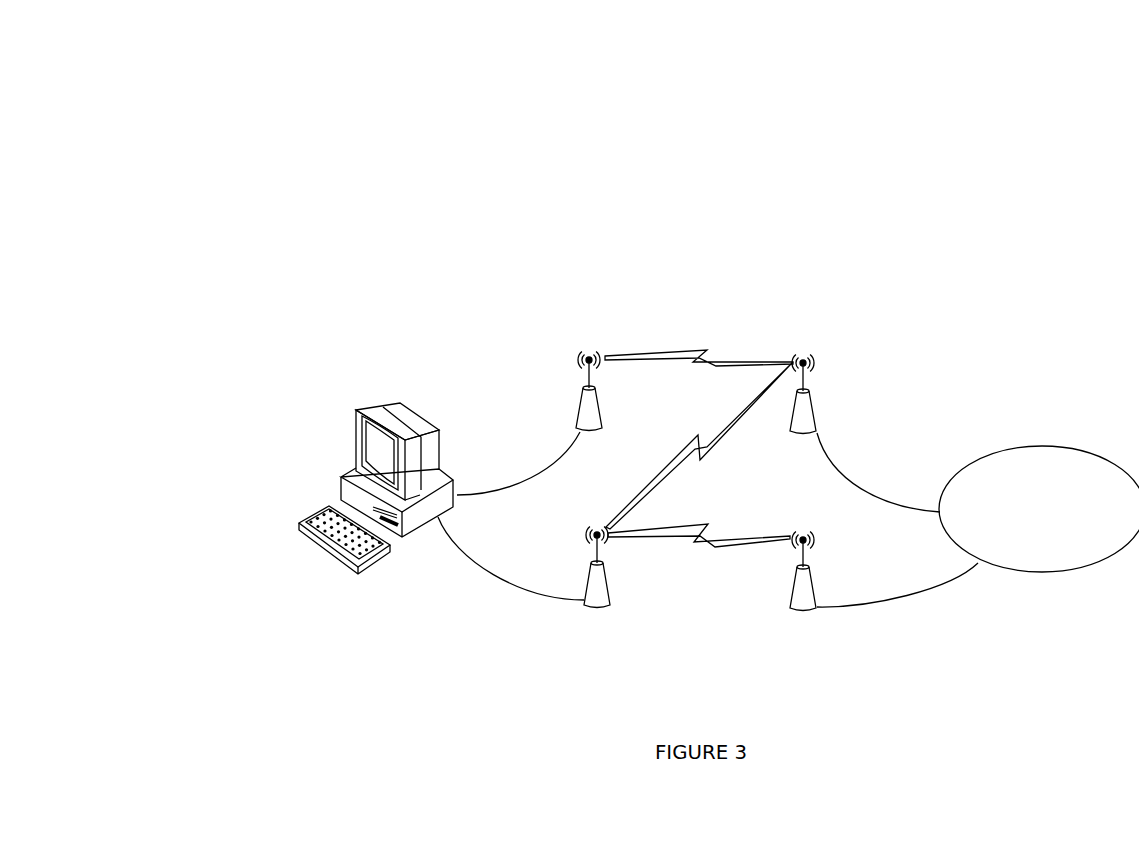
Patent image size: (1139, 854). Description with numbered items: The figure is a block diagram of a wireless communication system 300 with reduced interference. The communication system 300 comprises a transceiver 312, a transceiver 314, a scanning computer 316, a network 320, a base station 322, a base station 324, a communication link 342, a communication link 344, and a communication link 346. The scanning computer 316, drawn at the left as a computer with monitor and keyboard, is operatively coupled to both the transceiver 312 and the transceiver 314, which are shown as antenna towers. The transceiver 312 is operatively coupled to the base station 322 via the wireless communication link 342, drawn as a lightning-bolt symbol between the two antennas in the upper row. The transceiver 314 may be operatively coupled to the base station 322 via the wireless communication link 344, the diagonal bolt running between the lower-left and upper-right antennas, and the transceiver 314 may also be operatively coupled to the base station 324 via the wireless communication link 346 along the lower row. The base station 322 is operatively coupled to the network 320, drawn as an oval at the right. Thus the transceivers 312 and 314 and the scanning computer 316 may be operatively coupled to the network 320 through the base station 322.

The communication system 300 is at (184, 44).
The scanning computer 316 is at (369, 409).
The transceiver 312 is at (592, 431).
The transceiver 314 is at (598, 608).
The base station 322 is at (803, 436).
The base station 324 is at (802, 612).
The communication link 342 is at (718, 366).
The communication link 344 is at (660, 478).
The communication link 346 is at (713, 546).
The network 320 is at (1026, 532).